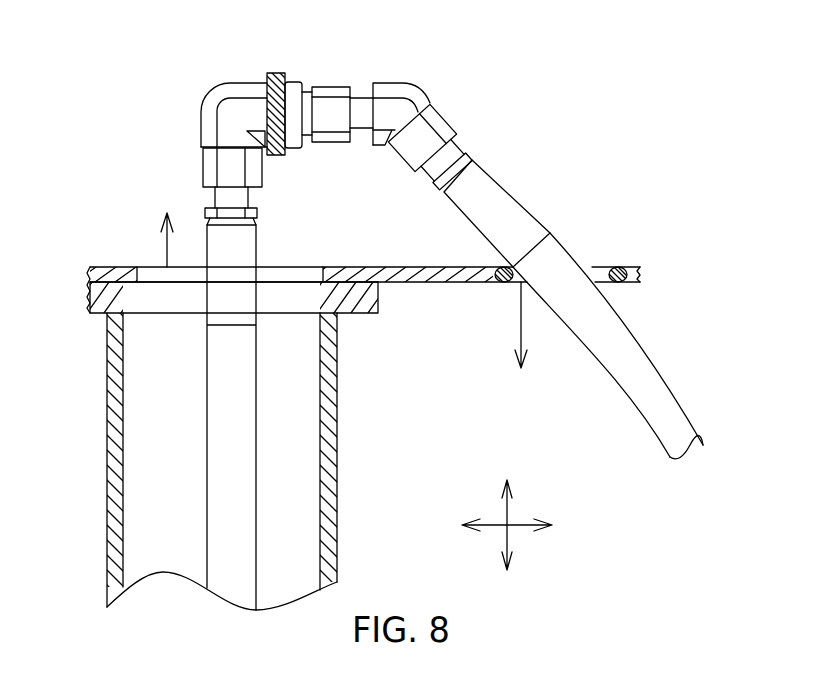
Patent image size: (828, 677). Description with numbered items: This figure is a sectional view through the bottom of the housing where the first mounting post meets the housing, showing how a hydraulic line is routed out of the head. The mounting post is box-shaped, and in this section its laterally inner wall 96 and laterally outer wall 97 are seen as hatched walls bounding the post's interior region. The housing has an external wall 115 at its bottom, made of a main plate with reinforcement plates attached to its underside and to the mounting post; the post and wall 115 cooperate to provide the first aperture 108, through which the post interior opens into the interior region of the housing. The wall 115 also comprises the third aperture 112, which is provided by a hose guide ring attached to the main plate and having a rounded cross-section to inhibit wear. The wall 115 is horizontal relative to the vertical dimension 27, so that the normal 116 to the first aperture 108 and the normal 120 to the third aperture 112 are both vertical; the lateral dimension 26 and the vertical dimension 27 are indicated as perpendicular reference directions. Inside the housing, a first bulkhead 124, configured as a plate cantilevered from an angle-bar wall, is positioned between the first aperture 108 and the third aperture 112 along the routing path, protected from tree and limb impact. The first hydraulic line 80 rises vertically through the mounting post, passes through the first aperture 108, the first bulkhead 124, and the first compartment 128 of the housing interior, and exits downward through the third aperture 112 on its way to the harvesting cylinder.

The lateral dimension 26 is at (525, 525).
The vertical dimension 27 is at (508, 543).
The first hydraulic line 80 is at (201, 132).
The laterally inner wall 96 is at (337, 530).
The laterally outer wall 97 is at (107, 522).
The first aperture 108 is at (230, 417).
The third aperture 112 is at (597, 267).
The external wall 115 is at (370, 268).
The normal to the first aperture 116 is at (167, 252).
The normal to the third aperture 120 is at (522, 338).
The first bulkhead 124 is at (277, 72).
The first compartment 128 is at (437, 282).